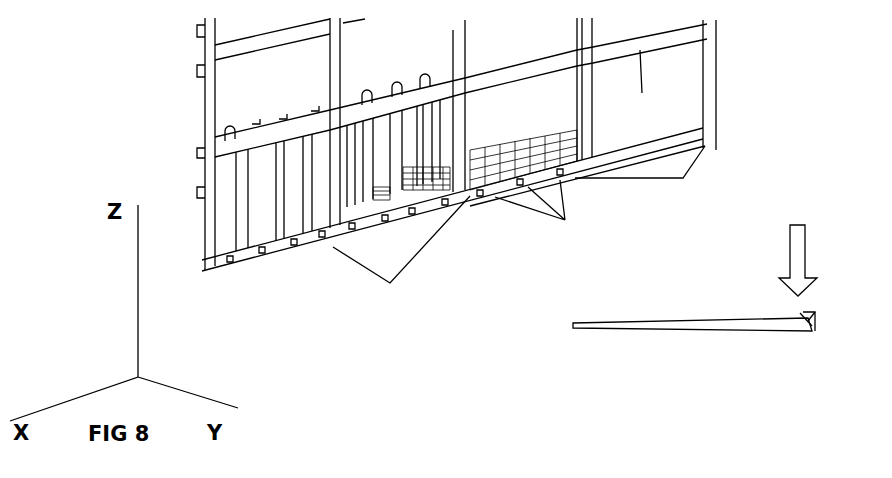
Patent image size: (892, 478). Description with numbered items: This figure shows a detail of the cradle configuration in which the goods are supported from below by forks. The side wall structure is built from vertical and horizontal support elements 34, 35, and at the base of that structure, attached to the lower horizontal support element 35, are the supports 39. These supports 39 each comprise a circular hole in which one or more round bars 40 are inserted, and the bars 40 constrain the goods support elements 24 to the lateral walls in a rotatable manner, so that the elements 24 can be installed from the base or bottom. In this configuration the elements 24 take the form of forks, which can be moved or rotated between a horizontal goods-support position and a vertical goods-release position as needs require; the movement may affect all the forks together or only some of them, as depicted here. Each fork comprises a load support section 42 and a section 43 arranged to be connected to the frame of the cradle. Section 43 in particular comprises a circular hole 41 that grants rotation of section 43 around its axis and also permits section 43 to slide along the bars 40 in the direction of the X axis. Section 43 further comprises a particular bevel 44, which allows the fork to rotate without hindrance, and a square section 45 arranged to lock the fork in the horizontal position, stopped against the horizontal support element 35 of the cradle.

The elements for supporting the goods from below 24 is at (315, 110).
The vertical support element 34 is at (577, 33).
The lower horizontal support element 35 is at (663, 132).
The supports 39 is at (522, 230).
The round bars 40 is at (537, 222).
The circular hole 41 is at (815, 323).
The load support section 42 is at (661, 330).
The section arranged to be connected to the frame of the cradle 43 is at (798, 246).
The bevel 44 is at (806, 320).
The square section 45 is at (808, 318).